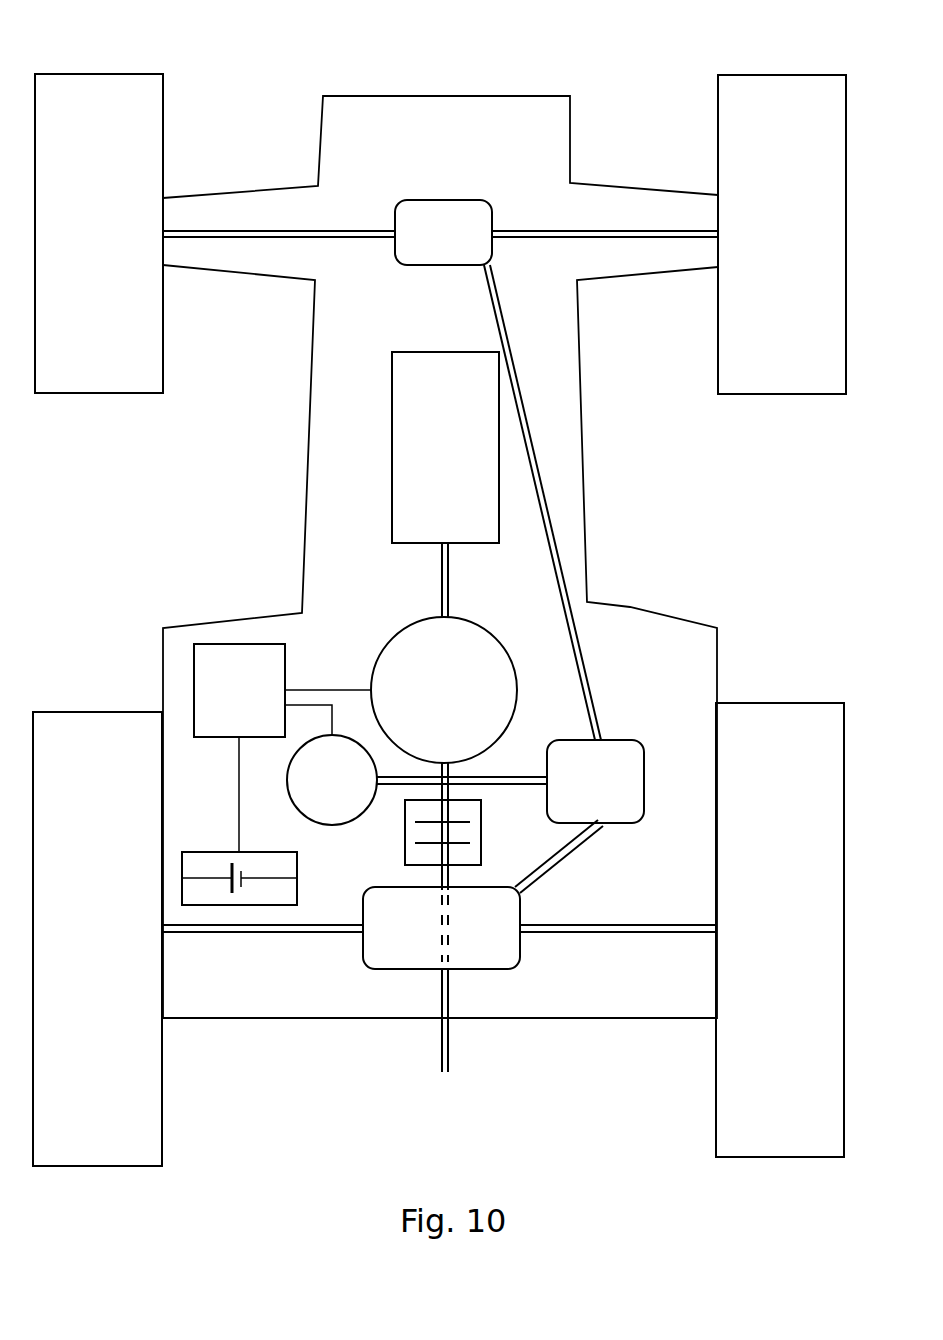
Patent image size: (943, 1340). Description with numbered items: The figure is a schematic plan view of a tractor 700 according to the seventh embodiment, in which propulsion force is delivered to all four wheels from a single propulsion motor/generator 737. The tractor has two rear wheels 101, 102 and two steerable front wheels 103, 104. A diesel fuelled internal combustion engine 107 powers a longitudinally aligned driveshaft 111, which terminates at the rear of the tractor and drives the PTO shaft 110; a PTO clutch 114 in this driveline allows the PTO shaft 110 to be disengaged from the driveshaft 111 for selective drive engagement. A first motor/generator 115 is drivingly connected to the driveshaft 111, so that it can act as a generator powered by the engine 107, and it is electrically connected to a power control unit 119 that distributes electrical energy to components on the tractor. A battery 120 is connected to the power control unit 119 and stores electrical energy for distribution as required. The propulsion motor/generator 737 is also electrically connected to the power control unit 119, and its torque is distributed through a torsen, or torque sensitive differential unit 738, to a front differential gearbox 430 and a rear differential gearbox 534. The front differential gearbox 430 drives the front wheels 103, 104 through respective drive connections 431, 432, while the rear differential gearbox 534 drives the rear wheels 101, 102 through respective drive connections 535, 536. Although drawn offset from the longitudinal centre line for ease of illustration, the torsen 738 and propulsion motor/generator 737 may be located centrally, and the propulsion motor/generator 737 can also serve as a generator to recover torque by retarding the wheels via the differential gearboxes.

The tractor 700 is at (300, 62).
The rear wheel 101 is at (58, 1166).
The rear wheel 102 is at (747, 1157).
The front wheel 103 is at (68, 393).
The front wheel 104 is at (827, 394).
The front differential gearbox 430 is at (477, 202).
The drive connection 431 is at (233, 230).
The drive connection 432 is at (623, 232).
The internal combustion engine 107 is at (453, 460).
The driveshaft 111 is at (448, 595).
The first motor/generator 115 is at (507, 657).
The power control unit 119 is at (248, 708).
The propulsion motor/generator 737 is at (290, 804).
The battery 120 is at (268, 878).
The PTO shaft 110 is at (482, 926).
The PTO clutch 114 is at (481, 835).
The torque sensitive differential unit 738 is at (640, 743).
The rear differential gearbox 534 is at (398, 969).
The drive connection 535 is at (257, 935).
The drive connection 536 is at (638, 933).